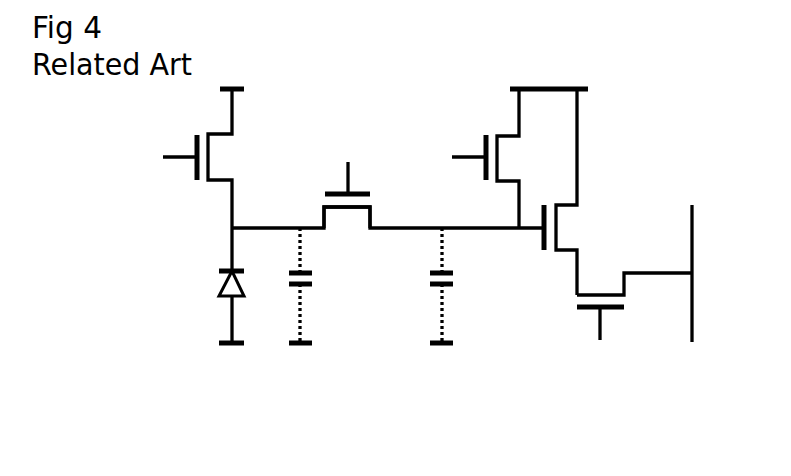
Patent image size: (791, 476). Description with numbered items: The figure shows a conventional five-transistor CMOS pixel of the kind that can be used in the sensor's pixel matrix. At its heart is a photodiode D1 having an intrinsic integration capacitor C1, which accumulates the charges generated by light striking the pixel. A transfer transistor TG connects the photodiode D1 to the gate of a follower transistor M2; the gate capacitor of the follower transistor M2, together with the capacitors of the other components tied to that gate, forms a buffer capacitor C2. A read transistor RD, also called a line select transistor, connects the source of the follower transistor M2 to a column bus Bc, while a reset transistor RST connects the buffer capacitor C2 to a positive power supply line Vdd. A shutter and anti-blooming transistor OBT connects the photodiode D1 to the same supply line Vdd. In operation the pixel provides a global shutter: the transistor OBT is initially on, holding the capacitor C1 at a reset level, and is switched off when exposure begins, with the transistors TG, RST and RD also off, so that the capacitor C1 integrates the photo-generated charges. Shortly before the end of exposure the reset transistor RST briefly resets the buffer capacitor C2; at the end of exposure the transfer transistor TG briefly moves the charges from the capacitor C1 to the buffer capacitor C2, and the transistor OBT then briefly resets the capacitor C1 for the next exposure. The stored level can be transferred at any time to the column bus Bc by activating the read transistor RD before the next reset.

The shutter and anti-blooming transistor OBT is at (175, 158).
The transfer transistor TG is at (347, 184).
The photodiode D1 is at (212, 285).
The intrinsic capacitor C1 is at (315, 285).
The buffer capacitor C2 is at (456, 285).
The positive power supply line Vdd is at (549, 73).
The reset transistor RST is at (463, 158).
The follower transistor M2 is at (572, 192).
The read transistor RD is at (634, 322).
The column bus Bc is at (711, 273).